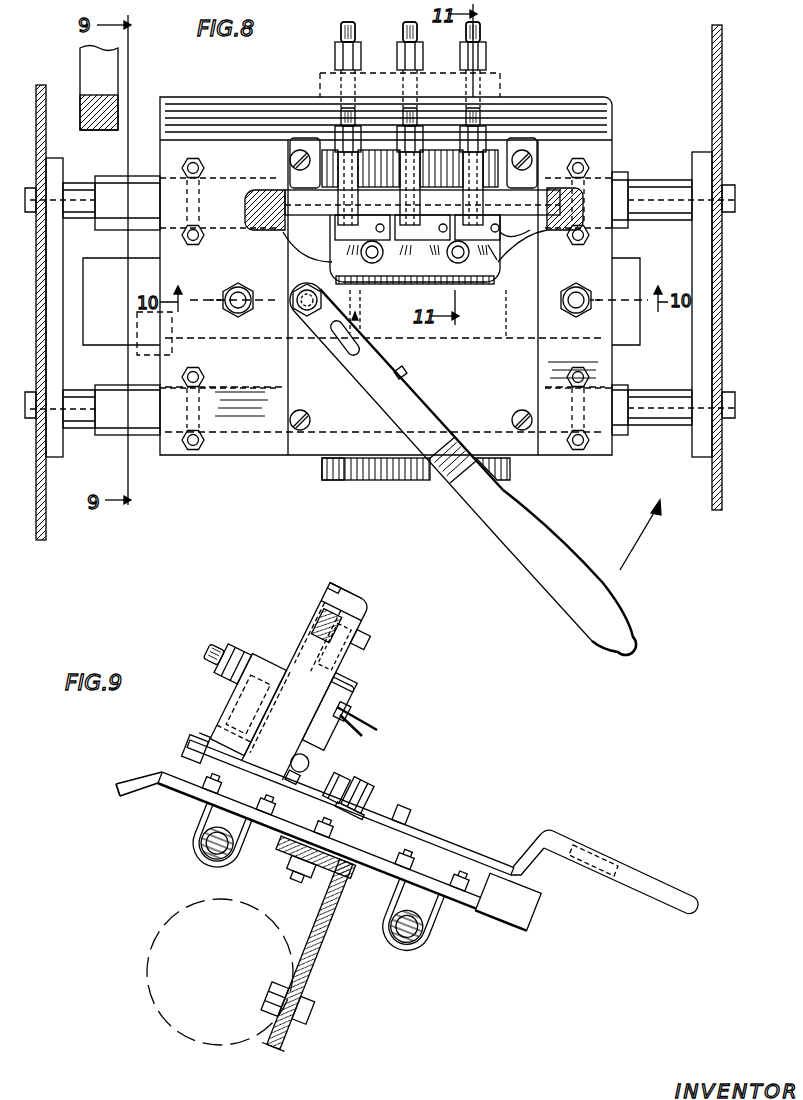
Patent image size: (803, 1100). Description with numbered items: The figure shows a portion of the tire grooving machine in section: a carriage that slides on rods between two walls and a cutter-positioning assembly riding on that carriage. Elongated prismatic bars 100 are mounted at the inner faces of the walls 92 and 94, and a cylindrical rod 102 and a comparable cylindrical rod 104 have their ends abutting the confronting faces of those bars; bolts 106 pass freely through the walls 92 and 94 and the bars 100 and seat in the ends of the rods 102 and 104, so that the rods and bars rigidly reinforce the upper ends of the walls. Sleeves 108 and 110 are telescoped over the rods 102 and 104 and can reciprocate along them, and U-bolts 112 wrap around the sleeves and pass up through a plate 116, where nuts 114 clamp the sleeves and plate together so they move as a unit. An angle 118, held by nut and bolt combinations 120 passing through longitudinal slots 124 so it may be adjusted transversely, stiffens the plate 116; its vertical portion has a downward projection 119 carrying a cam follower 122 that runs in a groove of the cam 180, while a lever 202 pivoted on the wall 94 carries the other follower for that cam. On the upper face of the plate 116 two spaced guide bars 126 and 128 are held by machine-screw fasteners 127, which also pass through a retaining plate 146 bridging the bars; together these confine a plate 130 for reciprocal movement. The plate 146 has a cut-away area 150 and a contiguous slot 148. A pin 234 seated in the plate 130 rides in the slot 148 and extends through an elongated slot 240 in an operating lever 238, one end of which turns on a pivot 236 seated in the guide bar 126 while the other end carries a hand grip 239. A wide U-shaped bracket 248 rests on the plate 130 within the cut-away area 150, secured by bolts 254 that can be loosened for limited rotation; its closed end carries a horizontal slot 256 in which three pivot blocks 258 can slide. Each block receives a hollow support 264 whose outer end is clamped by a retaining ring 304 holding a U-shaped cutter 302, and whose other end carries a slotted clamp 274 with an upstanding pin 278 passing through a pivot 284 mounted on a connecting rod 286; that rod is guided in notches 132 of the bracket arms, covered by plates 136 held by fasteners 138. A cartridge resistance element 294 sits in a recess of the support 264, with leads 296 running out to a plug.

In FIG. 8, the wall 92 is at (722, 497).
In FIG. 8, the wall 94 is at (40, 542).
In FIG. 8, the bars 100 is at (56, 458).
In FIG. 8, the cylindrical rod 102 is at (80, 182).
In FIG. 9, the cylindrical rod 102 is at (203, 832).
In FIG. 8, the cylindrical rod 104 is at (88, 430).
In FIG. 9, the cylindrical rod 104 is at (418, 956).
In FIG. 8, the bolts 106 is at (30, 214).
In FIG. 8, the sleeve 108 is at (143, 178).
In FIG. 9, the sleeve 108 is at (194, 856).
In FIG. 8, the sleeve 110 is at (150, 437).
In FIG. 9, the sleeve 110 is at (392, 948).
In FIG. 8, the U-bolts 112 is at (212, 182).
In FIG. 9, the U-bolts 112 is at (205, 873).
In FIG. 8, the nuts 114 is at (205, 164).
In FIG. 9, the nuts 114 is at (220, 784).
In FIG. 9, the plate 116 is at (130, 778).
In FIG. 8, the angle 118 is at (658, 340).
In FIG. 9, the angle 118 is at (328, 908).
In FIG. 9, the projection 119 is at (298, 1052).
In FIG. 8, the nut and bolt combinations 120 is at (226, 310).
In FIG. 9, the nut and bolt combinations 120 is at (302, 878).
In FIG. 8, the cam follower 122 is at (150, 357).
In FIG. 9, the cam follower 122 is at (268, 1003).
In FIG. 8, the slots 124 is at (215, 296).
In FIG. 8, the guide bar 126 is at (312, 455).
In FIG. 9, the guide bar 126 is at (475, 888).
In FIG. 8, the fasteners 127 is at (413, 283).
In FIG. 8, the guide bar 128 is at (508, 470).
In FIG. 8, the plate 130 is at (338, 481).
In FIG. 9, the plate 130 is at (188, 742).
In FIG. 9, the notches 132 is at (343, 604).
In FIG. 9, the plates 136 is at (340, 586).
In FIG. 9, the fasteners 138 is at (326, 593).
In FIG. 8, the retaining plate 146 is at (385, 482).
In FIG. 9, the retaining plate 146 is at (213, 714).
In FIG. 8, the slot 148 is at (360, 322).
In FIG. 8, the cut-away area 150 is at (494, 313).
In FIG. 9, the cam 180 is at (147, 980).
In FIG. 8, the lever 202 is at (82, 62).
In FIG. 8, the pin 234 is at (404, 376).
In FIG. 9, the pin 234 is at (408, 815).
In FIG. 8, the pivot 236 is at (294, 296).
In FIG. 9, the pivot 236 is at (360, 778).
In FIG. 8, the operating lever 238 is at (470, 502).
In FIG. 9, the operating lever 238 is at (540, 888).
In FIG. 8, the hand grip 239 is at (620, 606).
In FIG. 9, the hand grip 239 is at (655, 893).
In FIG. 8, the slot 240 is at (348, 362).
In FIG. 8, the bracket 248 is at (262, 192).
In FIG. 9, the bracket 248 is at (368, 606).
In FIG. 8, the bolts 254 is at (480, 295).
In FIG. 9, the bolts 254 is at (336, 772).
In FIG. 8, the slot 256 is at (422, 202).
In FIG. 9, the slot 256 is at (300, 770).
In FIG. 9, the pivot blocks 258 is at (233, 697).
In FIG. 8, the support 264 is at (560, 160).
In FIG. 9, the support 264 is at (338, 708).
In FIG. 8, the slotted clamp 274 is at (512, 224).
In FIG. 9, the slotted clamp 274 is at (345, 690).
In FIG. 8, the pin 278 is at (417, 245).
In FIG. 9, the pin 278 is at (340, 680).
In FIG. 9, the pivot 284 is at (372, 637).
In FIG. 9, the connecting rod 286 is at (320, 618).
In FIG. 8, the resistance element 294 is at (500, 257).
In FIG. 9, the resistance element 294 is at (377, 730).
In FIG. 9, the leads 296 is at (362, 736).
In FIG. 8, the cutter 302 is at (354, 110).
In FIG. 9, the cutter 302 is at (213, 660).
In FIG. 8, the retaining ring 304 is at (483, 133).
In FIG. 9, the retaining ring 304 is at (242, 655).